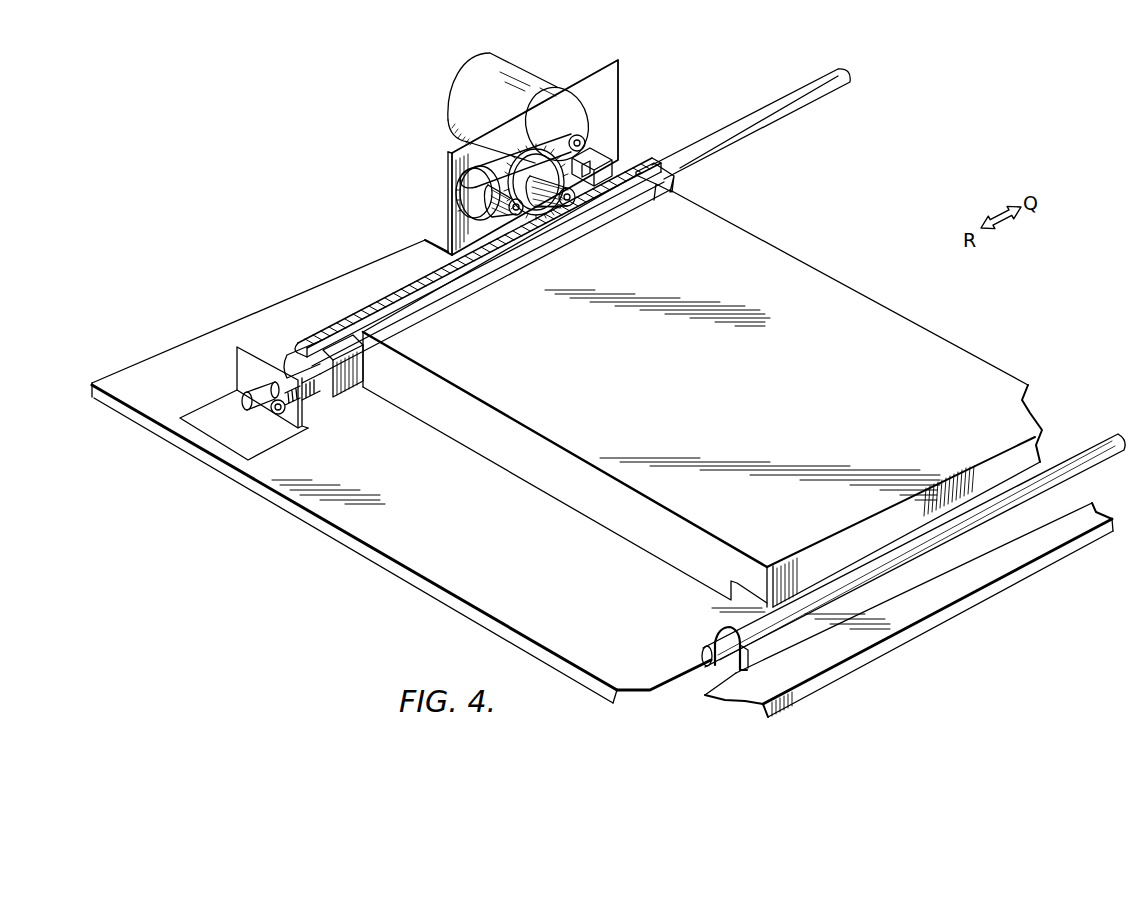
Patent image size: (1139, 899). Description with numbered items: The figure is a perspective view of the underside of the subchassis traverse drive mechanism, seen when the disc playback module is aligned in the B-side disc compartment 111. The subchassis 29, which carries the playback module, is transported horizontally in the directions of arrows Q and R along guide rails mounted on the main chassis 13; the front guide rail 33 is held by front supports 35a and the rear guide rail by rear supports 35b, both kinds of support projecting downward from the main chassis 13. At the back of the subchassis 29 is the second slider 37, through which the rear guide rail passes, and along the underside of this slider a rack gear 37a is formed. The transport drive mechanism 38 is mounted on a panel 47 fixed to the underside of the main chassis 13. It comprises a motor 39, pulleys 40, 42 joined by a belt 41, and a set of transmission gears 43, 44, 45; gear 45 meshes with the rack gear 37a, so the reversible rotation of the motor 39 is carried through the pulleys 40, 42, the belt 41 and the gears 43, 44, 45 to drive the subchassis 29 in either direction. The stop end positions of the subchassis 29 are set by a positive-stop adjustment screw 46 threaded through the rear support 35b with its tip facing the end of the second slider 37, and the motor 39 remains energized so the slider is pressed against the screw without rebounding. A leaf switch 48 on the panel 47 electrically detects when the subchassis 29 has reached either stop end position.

The main chassis 13 is at (400, 566).
The subchassis 29 is at (485, 446).
The guide rail 33 is at (801, 602).
The front support 35a is at (712, 632).
The rear support 35b is at (245, 367).
The second slider 37 is at (350, 386).
The rack gear 37a is at (452, 282).
The transport drive mechanism 38 is at (434, 105).
The motor 39 is at (474, 74).
The pulley 40 is at (577, 136).
The belt 41 is at (482, 150).
The pulley 42 is at (478, 196).
The transmission gear 43 is at (504, 213).
The transmission gear 44 is at (541, 148).
The transmission gear 45 is at (556, 213).
The positive-stop adjustment screw 46 is at (295, 414).
The panel 47 is at (590, 90).
The leaf switch 48 is at (597, 147).
The disc compartment 111 is at (964, 584).